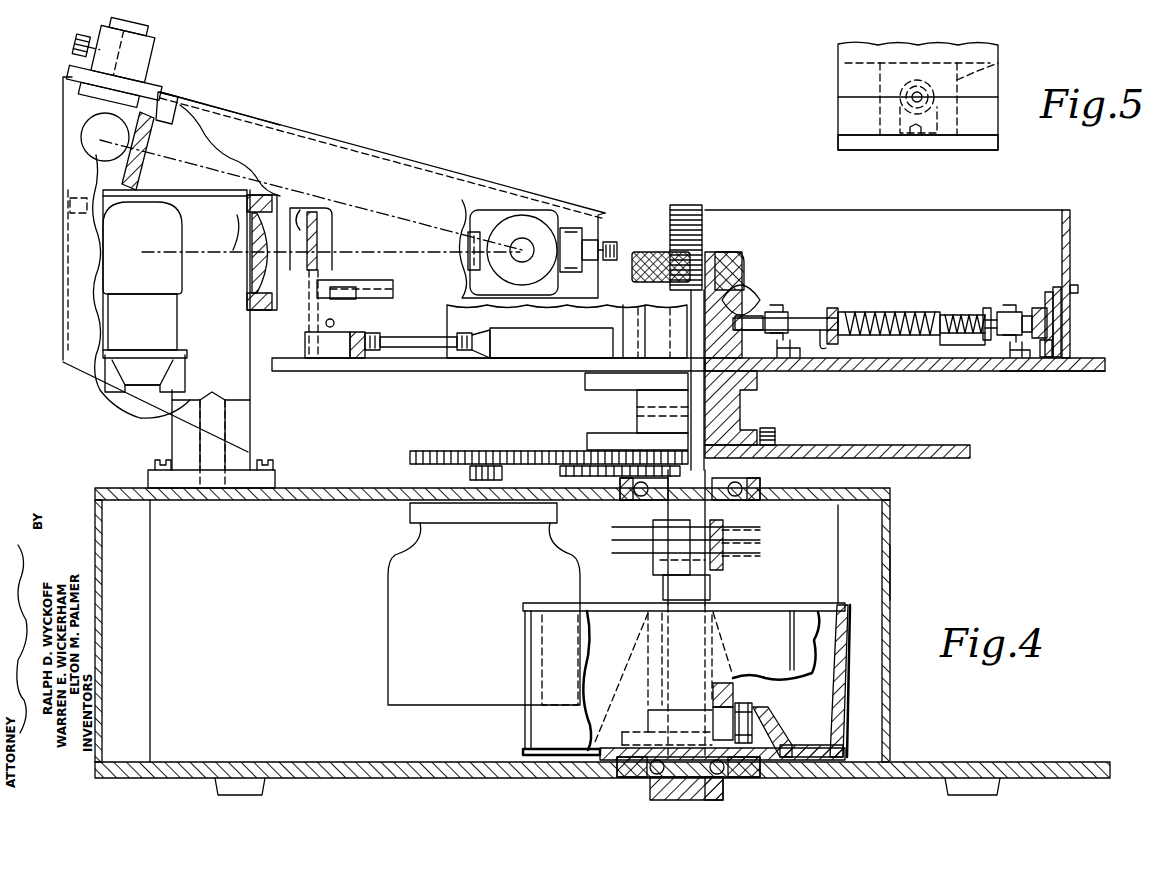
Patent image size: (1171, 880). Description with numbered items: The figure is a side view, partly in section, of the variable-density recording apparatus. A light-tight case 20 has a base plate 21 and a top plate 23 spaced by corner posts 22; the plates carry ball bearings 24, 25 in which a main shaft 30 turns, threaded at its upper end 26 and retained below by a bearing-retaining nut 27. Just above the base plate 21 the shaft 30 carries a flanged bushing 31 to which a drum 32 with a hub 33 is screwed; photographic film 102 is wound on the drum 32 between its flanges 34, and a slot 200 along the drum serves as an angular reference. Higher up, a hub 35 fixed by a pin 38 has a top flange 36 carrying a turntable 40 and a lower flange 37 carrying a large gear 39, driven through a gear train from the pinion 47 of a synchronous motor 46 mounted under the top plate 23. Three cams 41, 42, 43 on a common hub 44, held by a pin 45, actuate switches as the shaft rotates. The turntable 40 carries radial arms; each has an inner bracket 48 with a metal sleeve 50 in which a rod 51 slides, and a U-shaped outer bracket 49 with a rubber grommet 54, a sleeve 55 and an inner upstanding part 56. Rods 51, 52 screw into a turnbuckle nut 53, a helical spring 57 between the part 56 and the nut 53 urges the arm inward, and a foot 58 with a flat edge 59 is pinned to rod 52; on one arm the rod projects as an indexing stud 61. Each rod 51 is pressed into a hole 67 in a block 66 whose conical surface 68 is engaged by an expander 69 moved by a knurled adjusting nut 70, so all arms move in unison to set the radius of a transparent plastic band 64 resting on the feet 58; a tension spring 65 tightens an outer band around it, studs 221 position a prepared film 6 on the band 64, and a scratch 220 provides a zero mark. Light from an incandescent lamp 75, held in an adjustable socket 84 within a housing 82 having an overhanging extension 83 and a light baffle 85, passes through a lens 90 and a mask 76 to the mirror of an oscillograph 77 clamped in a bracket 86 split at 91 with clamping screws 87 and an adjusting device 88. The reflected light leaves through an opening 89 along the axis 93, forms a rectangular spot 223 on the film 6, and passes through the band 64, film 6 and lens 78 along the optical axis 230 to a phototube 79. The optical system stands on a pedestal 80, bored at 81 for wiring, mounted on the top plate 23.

In FIG. 4, the prepared film 6 is at (302, 238).
In FIG. 4, the case 20 is at (95, 503).
In FIG. 4, the base plate 21 is at (928, 764).
In FIG. 4, the posts 22 is at (152, 590).
In FIG. 4, the top plate 23 is at (320, 490).
In FIG. 4, the ball bearing 24 is at (724, 786).
In FIG. 4, the ball bearing 25 is at (761, 487).
In FIG. 4, the upper end of shaft 26 is at (702, 210).
In FIG. 4, the bearing-retaining nut 27 is at (650, 790).
In FIG. 4, the main shaft 30 is at (663, 588).
In FIG. 4, the flanged bushing 31 is at (770, 728).
In FIG. 4, the drum 32 is at (772, 680).
In FIG. 4, the hub 33 is at (735, 698).
In FIG. 4, the flanges 34 is at (866, 590).
In FIG. 4, the hub 35 is at (640, 414).
In FIG. 4, the top flange 36 is at (786, 373).
In FIG. 4, the lower flange 37 is at (776, 438).
In FIG. 4, the pin 38 is at (742, 411).
In FIG. 4, the large gear 39 is at (970, 451).
In FIG. 4, the turntable 40 is at (985, 372).
In FIG. 5, the turntable 40 is at (982, 150).
In FIG. 4, the cam 41 is at (760, 528).
In FIG. 4, the cam 42 is at (760, 541).
In FIG. 4, the cam 43 is at (760, 554).
In FIG. 4, the common hub 44 is at (712, 570).
In FIG. 4, the pin 45 is at (723, 565).
In FIG. 4, the synchronous motor 46 is at (388, 660).
In FIG. 4, the pinion 47 is at (470, 476).
In FIG. 4, the inner bracket 48 is at (776, 310).
In FIG. 4, the outer bracket 49 is at (1008, 305).
In FIG. 5, the outer bracket 49 is at (940, 118).
In FIG. 4, the metal sleeve 50 is at (832, 308).
In FIG. 4, the rod 51 is at (832, 333).
In FIG. 4, the rod 52 is at (986, 306).
In FIG. 4, the turnbuckle nut 53 is at (862, 312).
In FIG. 4, the rubber grommet 54 is at (1027, 312).
In FIG. 4, the metal sleeve 55 is at (1042, 308).
In FIG. 4, the inner upstanding part 56 is at (968, 314).
In FIG. 4, the helical spring 57 is at (950, 343).
In FIG. 4, the foot 58 is at (1040, 372).
In FIG. 5, the foot 58 is at (998, 63).
In FIG. 4, the flat edge 59 is at (1071, 347).
In FIG. 5, the flat edge 59 is at (947, 133).
In FIG. 4, the indexing stud 61 is at (345, 358).
In FIG. 4, the plastic band 64 is at (318, 242).
In FIG. 4, the tension spring 65 is at (418, 338).
In FIG. 4, the block 66 is at (746, 290).
In FIG. 4, the hole 67 is at (750, 314).
In FIG. 4, the conical inner surface 68 is at (742, 258).
In FIG. 4, the conical expander 69 is at (710, 256).
In FIG. 4, the knurled adjusting nut 70 is at (660, 252).
In FIG. 4, the incandescent lamp 75 is at (81, 135).
In FIG. 4, the aperture mask 76 is at (146, 155).
In FIG. 4, the oscillograph 77 is at (512, 203).
In FIG. 4, the lens 78 is at (255, 266).
In FIG. 4, the phototube 79 is at (170, 243).
In FIG. 4, the pedestal 80 is at (250, 456).
In FIG. 4, the bore for wiring 81 is at (250, 412).
In FIG. 4, the housing 82 is at (75, 288).
In FIG. 4, the overhanging extension 83 is at (402, 172).
In FIG. 4, the adjustable socket 84 is at (152, 68).
In FIG. 4, the light baffle 85 is at (184, 190).
In FIG. 4, the oscillograph bracket 86 is at (540, 216).
In FIG. 4, the adjustment clamping screws 87 is at (600, 228).
In FIG. 4, the adjusting device 88 is at (528, 246).
In FIG. 4, the opening 89 is at (326, 214).
In FIG. 4, the lens 90 is at (166, 104).
In FIG. 4, the split 91 is at (468, 252).
In FIG. 4, the axis 93 is at (384, 216).
In FIG. 4, the photographic film 102 is at (589, 648).
In FIG. 4, the slot 200 is at (775, 606).
In FIG. 4, the scratch 220 is at (338, 298).
In FIG. 4, the studs 221 is at (303, 300).
In FIG. 4, the spot of light 223 is at (286, 205).
In FIG. 4, the optical axis 230 is at (238, 218).